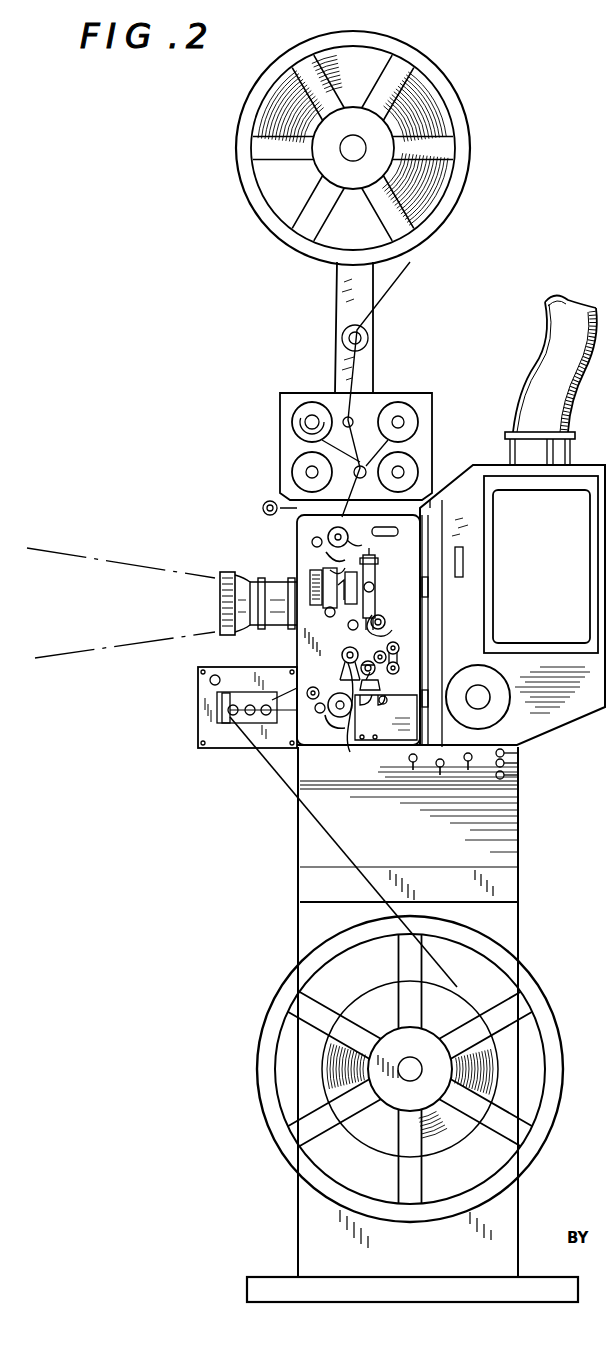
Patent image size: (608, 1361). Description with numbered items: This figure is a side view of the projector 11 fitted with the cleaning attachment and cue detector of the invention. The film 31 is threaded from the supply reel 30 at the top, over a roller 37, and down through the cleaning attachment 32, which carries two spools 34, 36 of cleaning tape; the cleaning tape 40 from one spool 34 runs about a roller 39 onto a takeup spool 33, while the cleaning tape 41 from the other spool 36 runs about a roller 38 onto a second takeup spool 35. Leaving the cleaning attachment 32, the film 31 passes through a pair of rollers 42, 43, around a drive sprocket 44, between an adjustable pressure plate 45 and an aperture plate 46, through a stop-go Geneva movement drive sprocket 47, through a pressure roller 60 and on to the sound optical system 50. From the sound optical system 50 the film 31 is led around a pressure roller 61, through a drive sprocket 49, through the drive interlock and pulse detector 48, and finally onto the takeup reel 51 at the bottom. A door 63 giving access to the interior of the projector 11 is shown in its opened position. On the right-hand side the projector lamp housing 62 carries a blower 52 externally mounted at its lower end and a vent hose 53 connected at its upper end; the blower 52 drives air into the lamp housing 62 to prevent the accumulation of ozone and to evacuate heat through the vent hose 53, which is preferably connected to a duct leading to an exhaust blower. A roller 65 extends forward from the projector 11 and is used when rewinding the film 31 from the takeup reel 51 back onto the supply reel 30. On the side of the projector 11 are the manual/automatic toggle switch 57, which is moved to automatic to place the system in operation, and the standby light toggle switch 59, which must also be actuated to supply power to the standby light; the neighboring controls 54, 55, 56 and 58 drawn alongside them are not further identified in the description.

The projector 11 is at (192, 475).
The supply reel 30 is at (430, 72).
The film 31 is at (388, 286).
The cleaning attachment 32 is at (283, 393).
The takeup spool 33 is at (292, 422).
The spool of cleaning tape 34 is at (292, 472).
The second takeup spool 35 is at (418, 416).
The spool of cleaning tape 36 is at (418, 474).
The roller 37 is at (369, 338).
The roller 38 is at (345, 517).
The roller 39 is at (388, 440).
The cleaning tape 40 is at (322, 440).
The cleaning tape 41 is at (359, 429).
The roller 42 is at (334, 520).
The roller 43 is at (368, 483).
The drive sprocket 44 is at (336, 562).
The adjustable pressure plate 45 is at (334, 604).
The aperture plate 46 is at (377, 583).
The stop-go Geneva movement drive sprocket 47 is at (385, 616).
The drive interlock and pulse detector 48 is at (198, 707).
The drive sprocket 49 is at (352, 745).
The sound optical system 50 is at (375, 678).
The takeup reel 51 is at (563, 1062).
The blower 52 is at (506, 715).
The vent hose 53 is at (570, 310).
The push button 54 is at (518, 751).
The push button 55 is at (518, 763).
The push button 56 is at (518, 777).
The manual/automatic toggle switch 57 is at (413, 770).
The indicator lamp 58 is at (440, 775).
The standby light toggle switch 59 is at (468, 770).
The pressure roller 60 is at (399, 650).
The pressure roller 61 is at (342, 658).
The projector lamp housing 62 is at (600, 467).
The door 63 is at (422, 618).
The roller 65 is at (263, 508).